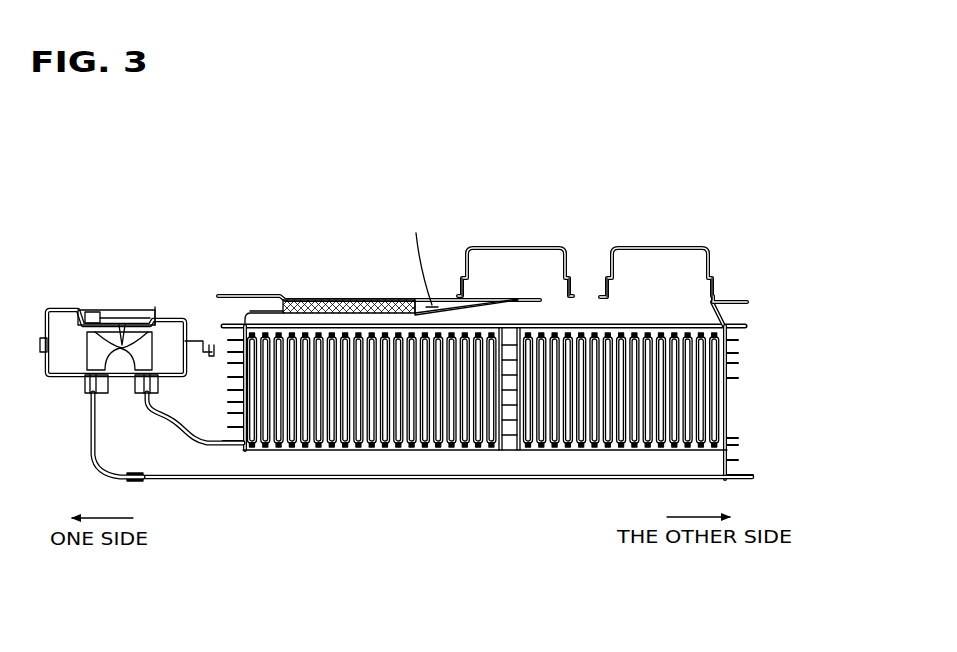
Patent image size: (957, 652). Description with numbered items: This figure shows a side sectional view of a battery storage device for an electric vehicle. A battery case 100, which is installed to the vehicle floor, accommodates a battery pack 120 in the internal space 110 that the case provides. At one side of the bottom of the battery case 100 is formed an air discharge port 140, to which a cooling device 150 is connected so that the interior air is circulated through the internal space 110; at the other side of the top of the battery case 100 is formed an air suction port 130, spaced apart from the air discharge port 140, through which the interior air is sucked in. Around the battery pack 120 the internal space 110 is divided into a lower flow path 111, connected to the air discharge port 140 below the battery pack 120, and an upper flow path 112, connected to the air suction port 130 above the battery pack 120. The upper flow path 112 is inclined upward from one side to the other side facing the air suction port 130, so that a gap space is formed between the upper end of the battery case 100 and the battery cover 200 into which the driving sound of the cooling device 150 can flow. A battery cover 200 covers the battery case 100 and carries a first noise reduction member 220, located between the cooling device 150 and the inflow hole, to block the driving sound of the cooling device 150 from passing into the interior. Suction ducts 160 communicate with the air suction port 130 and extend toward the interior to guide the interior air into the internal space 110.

The battery case 100 is at (401, 361).
The internal space 110 is at (488, 350).
The lower flow path 111 is at (506, 466).
The upper flow path 112 is at (594, 312).
The battery pack 120 is at (570, 445).
The air suction port 130 is at (558, 297).
The air discharge port 140 is at (236, 464).
The cooling device 150 is at (122, 322).
The suction duct 160 is at (494, 247).
The battery cover 200 is at (379, 244).
The first noise reduction member 220 is at (302, 299).